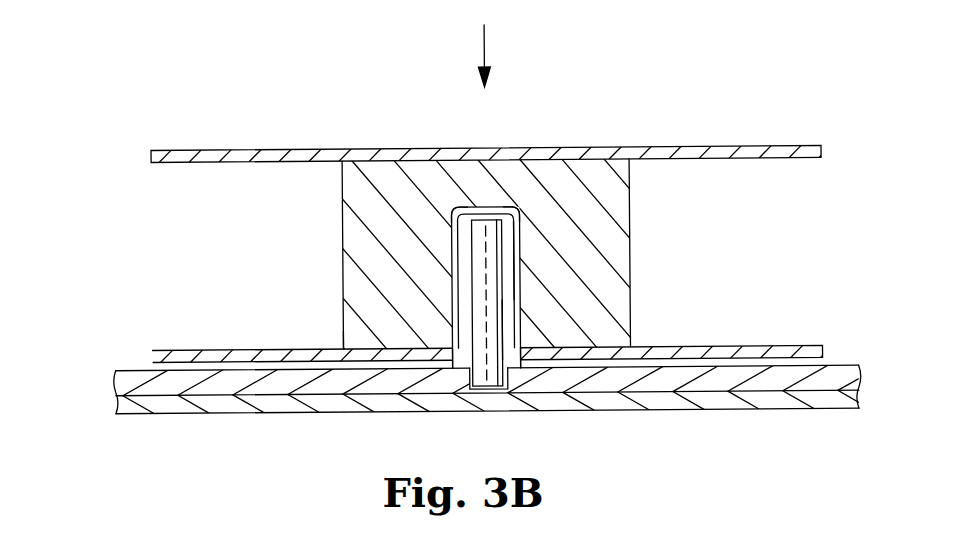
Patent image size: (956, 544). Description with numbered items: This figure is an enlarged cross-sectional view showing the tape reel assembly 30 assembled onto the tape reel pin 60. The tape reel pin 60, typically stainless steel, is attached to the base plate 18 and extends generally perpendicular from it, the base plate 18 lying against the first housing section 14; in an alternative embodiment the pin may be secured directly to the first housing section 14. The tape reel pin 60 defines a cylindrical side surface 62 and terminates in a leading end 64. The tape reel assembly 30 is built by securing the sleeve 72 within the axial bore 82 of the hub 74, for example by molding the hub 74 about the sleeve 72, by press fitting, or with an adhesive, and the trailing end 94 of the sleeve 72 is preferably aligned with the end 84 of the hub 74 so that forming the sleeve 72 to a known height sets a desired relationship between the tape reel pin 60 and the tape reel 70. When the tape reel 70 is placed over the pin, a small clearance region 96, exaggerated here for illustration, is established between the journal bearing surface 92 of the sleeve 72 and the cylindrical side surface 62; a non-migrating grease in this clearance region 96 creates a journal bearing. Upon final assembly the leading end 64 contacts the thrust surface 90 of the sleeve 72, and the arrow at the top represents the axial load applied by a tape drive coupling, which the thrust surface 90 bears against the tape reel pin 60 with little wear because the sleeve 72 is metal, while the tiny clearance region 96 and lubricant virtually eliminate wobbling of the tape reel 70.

The first housing section 14 is at (220, 408).
The base plate 18 is at (124, 374).
The first tape reel assembly 30 is at (145, 206).
The tape reel pin 60 is at (508, 322).
The cylindrical side surface 62 is at (476, 284).
The leading end 64 is at (486, 247).
The tape reel 70 is at (283, 227).
The sleeve 72 is at (514, 229).
The hub 74 is at (615, 170).
The axial bore 82 is at (520, 207).
The end 84 is at (362, 347).
The thrust surface 90 is at (487, 279).
The journal bearing surface 92 is at (470, 305).
The trailing end 94 is at (458, 365).
The clearance region 96 is at (455, 207).